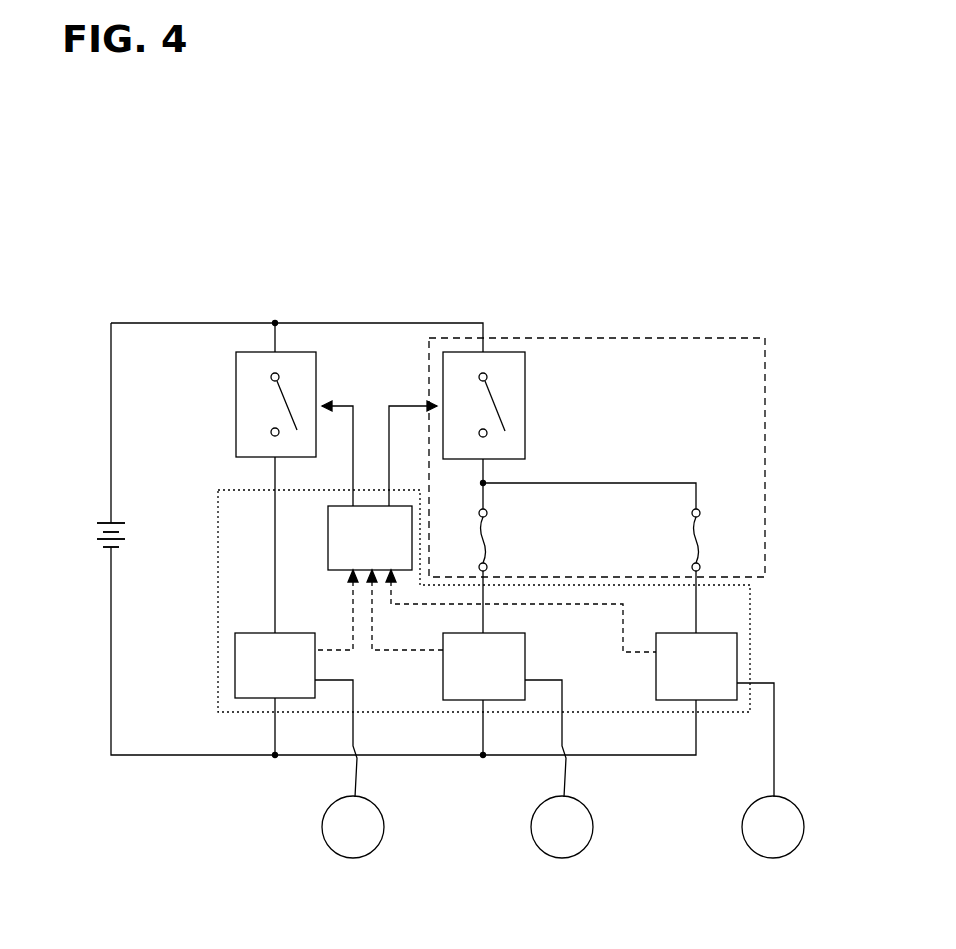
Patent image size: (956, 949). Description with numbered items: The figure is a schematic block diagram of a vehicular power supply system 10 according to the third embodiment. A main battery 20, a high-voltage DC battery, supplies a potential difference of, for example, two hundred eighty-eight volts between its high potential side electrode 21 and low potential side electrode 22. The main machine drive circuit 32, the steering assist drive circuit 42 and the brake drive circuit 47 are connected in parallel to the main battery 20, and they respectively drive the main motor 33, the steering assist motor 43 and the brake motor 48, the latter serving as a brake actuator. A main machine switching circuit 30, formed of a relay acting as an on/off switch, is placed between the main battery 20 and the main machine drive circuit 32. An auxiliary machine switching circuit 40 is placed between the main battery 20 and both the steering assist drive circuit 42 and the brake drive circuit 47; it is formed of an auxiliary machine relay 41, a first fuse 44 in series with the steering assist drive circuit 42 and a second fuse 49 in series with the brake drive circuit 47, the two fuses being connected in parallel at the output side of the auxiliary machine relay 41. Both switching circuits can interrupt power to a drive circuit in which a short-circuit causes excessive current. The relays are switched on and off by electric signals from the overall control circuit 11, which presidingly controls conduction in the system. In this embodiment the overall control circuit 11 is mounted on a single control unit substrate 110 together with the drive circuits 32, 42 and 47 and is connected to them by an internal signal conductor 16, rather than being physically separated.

The vehicular power supply system 10 is at (681, 308).
The overall control circuit 11 is at (328, 530).
The internal signal conductor 16 is at (331, 647).
The main battery 20 is at (82, 567).
The high potential side electrode 21 is at (118, 522).
The low potential side electrode 22 is at (118, 549).
The main machine switching circuit 30 is at (236, 409).
The main machine drive circuit 32 is at (235, 682).
The main motor 33 is at (322, 827).
The auxiliary machine switching circuit 40 is at (568, 336).
The auxiliary machine relay 41 is at (525, 404).
The steering assist drive circuit 42 is at (443, 682).
The steering assist motor 43 is at (531, 827).
The first fuse 44 is at (489, 528).
The brake drive circuit 47 is at (656, 682).
The brake motor 48 is at (742, 827).
The second fuse 49 is at (702, 528).
The control unit substrate 110 is at (750, 620).